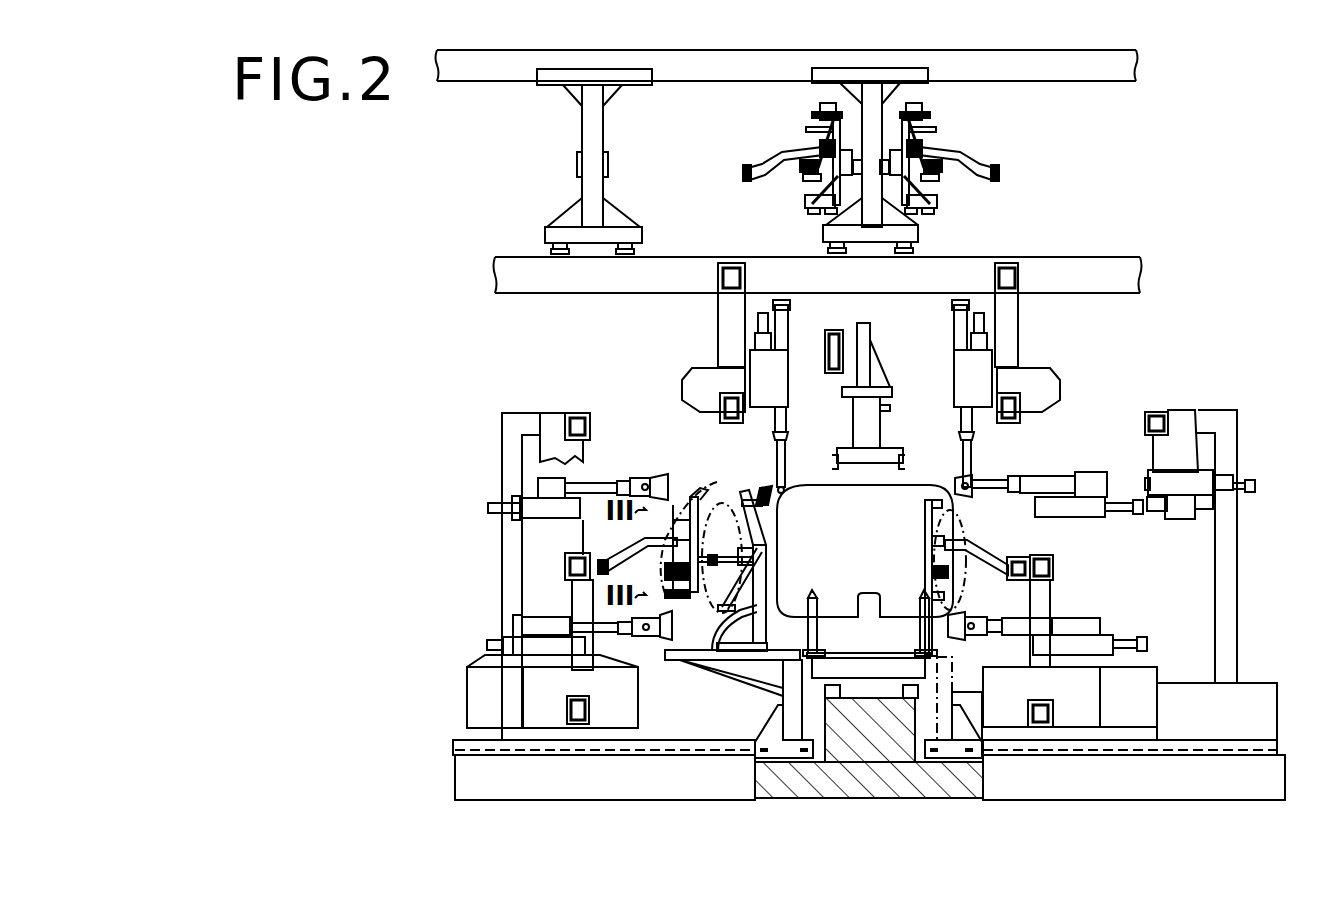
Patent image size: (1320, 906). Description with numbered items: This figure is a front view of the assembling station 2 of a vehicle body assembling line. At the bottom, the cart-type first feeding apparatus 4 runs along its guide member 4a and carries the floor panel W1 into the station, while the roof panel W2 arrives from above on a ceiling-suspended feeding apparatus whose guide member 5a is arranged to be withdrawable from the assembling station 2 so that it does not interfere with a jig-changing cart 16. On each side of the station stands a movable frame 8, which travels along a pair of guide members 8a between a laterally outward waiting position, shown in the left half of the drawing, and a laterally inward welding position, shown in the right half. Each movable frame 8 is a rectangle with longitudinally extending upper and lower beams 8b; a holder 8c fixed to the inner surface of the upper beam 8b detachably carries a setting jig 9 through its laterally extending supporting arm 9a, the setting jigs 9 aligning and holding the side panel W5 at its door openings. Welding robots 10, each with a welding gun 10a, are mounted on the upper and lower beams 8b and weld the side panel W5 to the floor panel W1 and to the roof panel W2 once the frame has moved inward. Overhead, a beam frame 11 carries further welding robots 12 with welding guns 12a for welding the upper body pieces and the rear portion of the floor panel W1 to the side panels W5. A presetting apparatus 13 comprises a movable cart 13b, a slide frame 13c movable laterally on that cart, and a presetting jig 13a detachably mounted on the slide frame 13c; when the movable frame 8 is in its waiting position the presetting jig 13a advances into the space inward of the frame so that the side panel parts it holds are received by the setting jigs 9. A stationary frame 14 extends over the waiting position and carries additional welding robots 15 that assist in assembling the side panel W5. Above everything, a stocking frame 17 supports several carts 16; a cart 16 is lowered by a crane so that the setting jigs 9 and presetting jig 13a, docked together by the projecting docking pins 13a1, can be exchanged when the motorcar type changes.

The assembling station 2 is at (884, 535).
The first feeding apparatus 4 is at (882, 668).
The guide member 4a is at (852, 750).
The guide member 5a is at (850, 330).
The movable frame 8 is at (572, 600).
The guide member 8a is at (690, 760).
The upper and lower beams 8b is at (565, 565).
The holder 8c is at (565, 570).
The setting jig 9 is at (768, 165).
The supporting arm 9a is at (622, 572).
The welding robot 10 is at (580, 480).
The welding gun 10a is at (655, 475).
The beam frame 11 is at (720, 422).
The welding robot 12 is at (786, 400).
The welding gun 12a is at (786, 485).
The presetting apparatus 13 is at (775, 710).
The presetting jig 13a is at (875, 160).
The docking pin 13a1 is at (800, 140).
The movable cart 13b is at (793, 755).
The slide frame 13c is at (700, 655).
The stationary frame 14 is at (582, 413).
The welding robot 15 is at (555, 415).
The cart 16 is at (628, 233).
The stocking frame 17 is at (1112, 260).
The floor panel W1 is at (840, 615).
The roof panel W2 is at (885, 485).
The side panel W5 is at (725, 500).